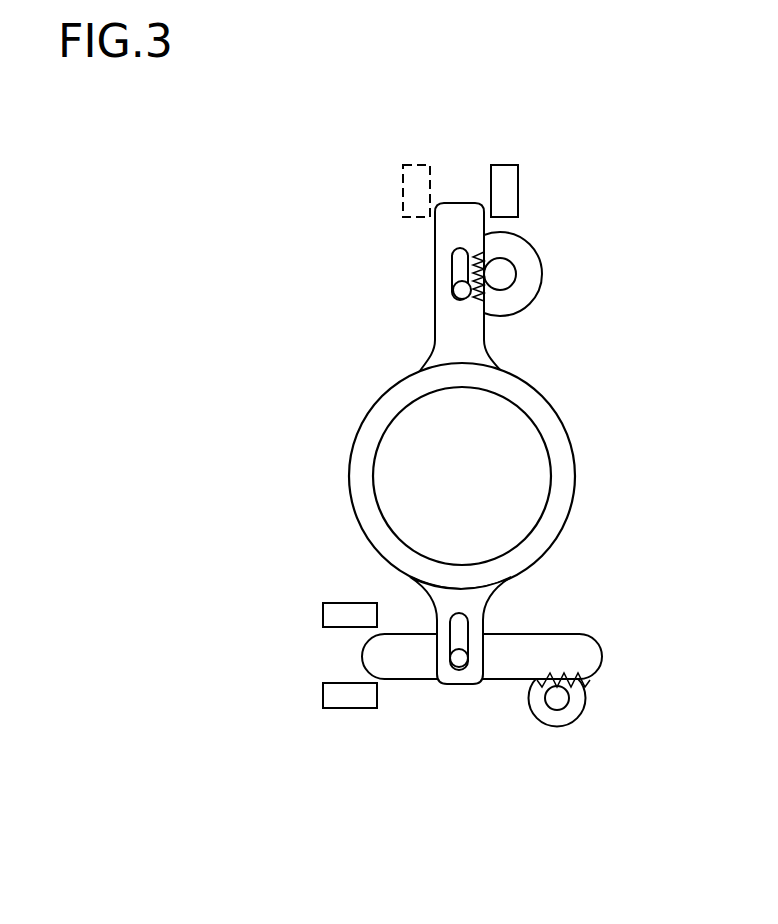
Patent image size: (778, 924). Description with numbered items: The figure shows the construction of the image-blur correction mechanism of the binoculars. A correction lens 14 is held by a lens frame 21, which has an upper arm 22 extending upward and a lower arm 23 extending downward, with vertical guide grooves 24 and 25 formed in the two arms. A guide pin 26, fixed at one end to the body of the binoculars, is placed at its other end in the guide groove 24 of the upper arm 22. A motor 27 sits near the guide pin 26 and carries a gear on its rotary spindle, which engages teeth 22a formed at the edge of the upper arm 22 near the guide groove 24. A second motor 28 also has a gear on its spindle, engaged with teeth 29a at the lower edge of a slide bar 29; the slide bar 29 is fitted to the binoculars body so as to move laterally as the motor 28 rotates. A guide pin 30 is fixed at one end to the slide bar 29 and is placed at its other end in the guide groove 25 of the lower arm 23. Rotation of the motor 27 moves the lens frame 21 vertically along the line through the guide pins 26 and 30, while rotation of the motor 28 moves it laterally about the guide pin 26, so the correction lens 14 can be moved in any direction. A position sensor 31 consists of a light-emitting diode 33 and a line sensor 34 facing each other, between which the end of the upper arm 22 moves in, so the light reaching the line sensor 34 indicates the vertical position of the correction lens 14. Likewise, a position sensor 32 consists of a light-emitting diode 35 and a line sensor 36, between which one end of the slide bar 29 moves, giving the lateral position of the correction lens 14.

The correction lens 14 is at (543, 468).
The lens frame 21 is at (345, 460).
The upper arm 22 is at (435, 333).
The teeth 22a is at (486, 294).
The lower arm 23 is at (487, 608).
The guide groove 24 is at (453, 258).
The guide groove 25 is at (453, 623).
The guide pin 26 is at (456, 290).
The motor 27 is at (527, 253).
The motor 28 is at (583, 713).
The slide bar 29 is at (582, 655).
The teeth 29a is at (538, 684).
The guide pin 30 is at (460, 667).
The position sensor 31 is at (518, 84).
The position sensor 32 is at (230, 600).
The light-emitting diode 33 is at (500, 166).
The line sensor 34 is at (413, 165).
The light-emitting diode 35 is at (323, 618).
The line sensor 36 is at (323, 703).